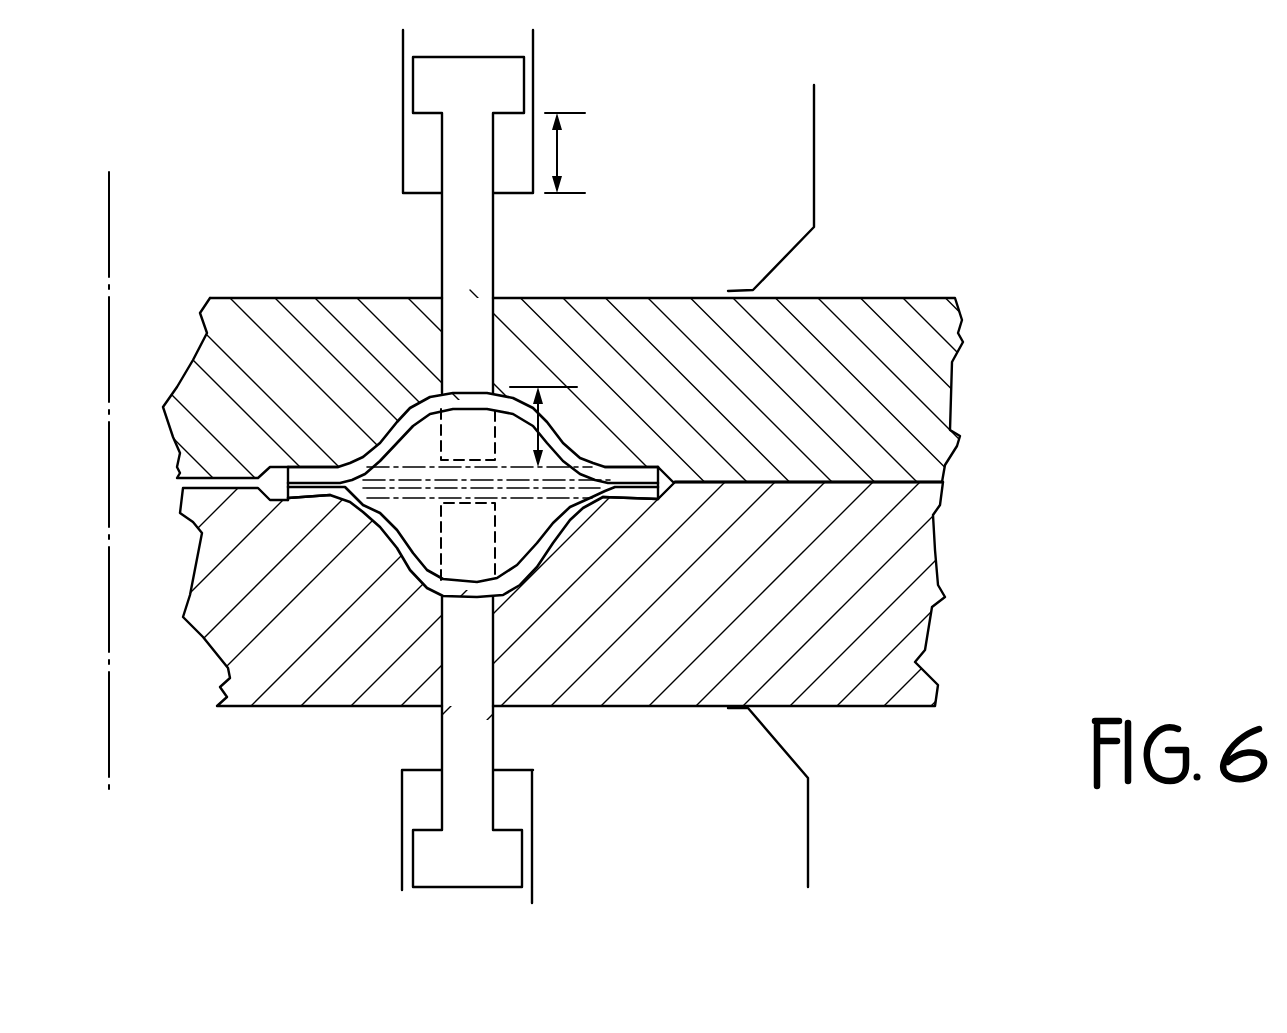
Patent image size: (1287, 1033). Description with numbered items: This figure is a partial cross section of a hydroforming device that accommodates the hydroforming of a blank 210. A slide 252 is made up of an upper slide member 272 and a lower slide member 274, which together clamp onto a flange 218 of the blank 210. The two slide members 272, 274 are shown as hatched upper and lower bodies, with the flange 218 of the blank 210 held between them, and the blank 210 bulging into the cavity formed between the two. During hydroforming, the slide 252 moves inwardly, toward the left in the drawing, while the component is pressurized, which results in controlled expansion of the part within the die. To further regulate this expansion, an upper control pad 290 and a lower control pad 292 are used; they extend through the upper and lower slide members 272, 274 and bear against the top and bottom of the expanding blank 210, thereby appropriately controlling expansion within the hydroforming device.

The blank 210 is at (518, 560).
The flange 218 is at (643, 486).
The slide 252 is at (958, 485).
The upper slide member 272 is at (930, 338).
The lower slide member 274 is at (905, 688).
The upper control pad 290 is at (473, 318).
The lower control pad 292 is at (480, 743).